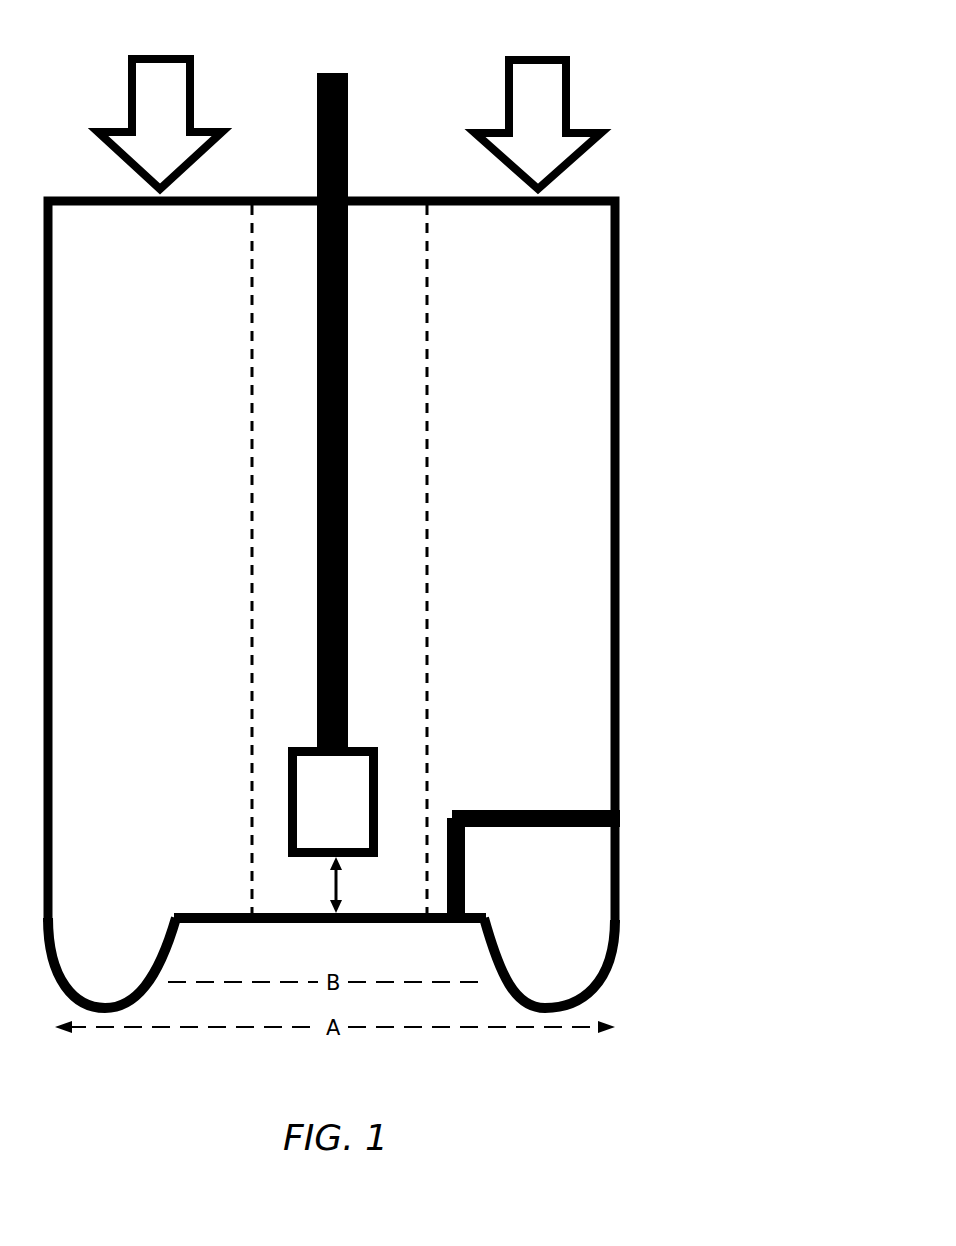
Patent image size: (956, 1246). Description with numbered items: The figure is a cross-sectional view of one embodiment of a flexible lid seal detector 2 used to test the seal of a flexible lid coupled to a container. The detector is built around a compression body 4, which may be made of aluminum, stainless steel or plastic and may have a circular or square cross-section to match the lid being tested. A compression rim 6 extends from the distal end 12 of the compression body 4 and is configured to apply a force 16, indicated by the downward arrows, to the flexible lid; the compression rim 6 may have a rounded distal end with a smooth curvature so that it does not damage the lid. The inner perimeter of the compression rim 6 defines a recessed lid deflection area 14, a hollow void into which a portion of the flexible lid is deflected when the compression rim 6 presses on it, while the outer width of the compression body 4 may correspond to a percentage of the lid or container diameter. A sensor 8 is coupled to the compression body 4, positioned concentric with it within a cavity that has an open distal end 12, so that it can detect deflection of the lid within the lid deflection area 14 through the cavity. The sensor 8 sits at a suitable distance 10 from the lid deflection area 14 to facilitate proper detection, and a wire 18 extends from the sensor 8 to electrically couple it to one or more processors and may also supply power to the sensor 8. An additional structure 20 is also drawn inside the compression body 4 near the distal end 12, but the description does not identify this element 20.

The flexible lid seal detector 2 is at (605, 64).
The compression body 4 is at (620, 283).
The compression rim 6 is at (600, 972).
The sensor 8 is at (287, 800).
The distance 10 is at (333, 887).
The distal end 12 is at (287, 925).
The recessed lid deflection area 14 is at (254, 1006).
The force 16 is at (147, 55).
The wire 18 is at (333, 72).
The L-shaped support 20 is at (475, 810).